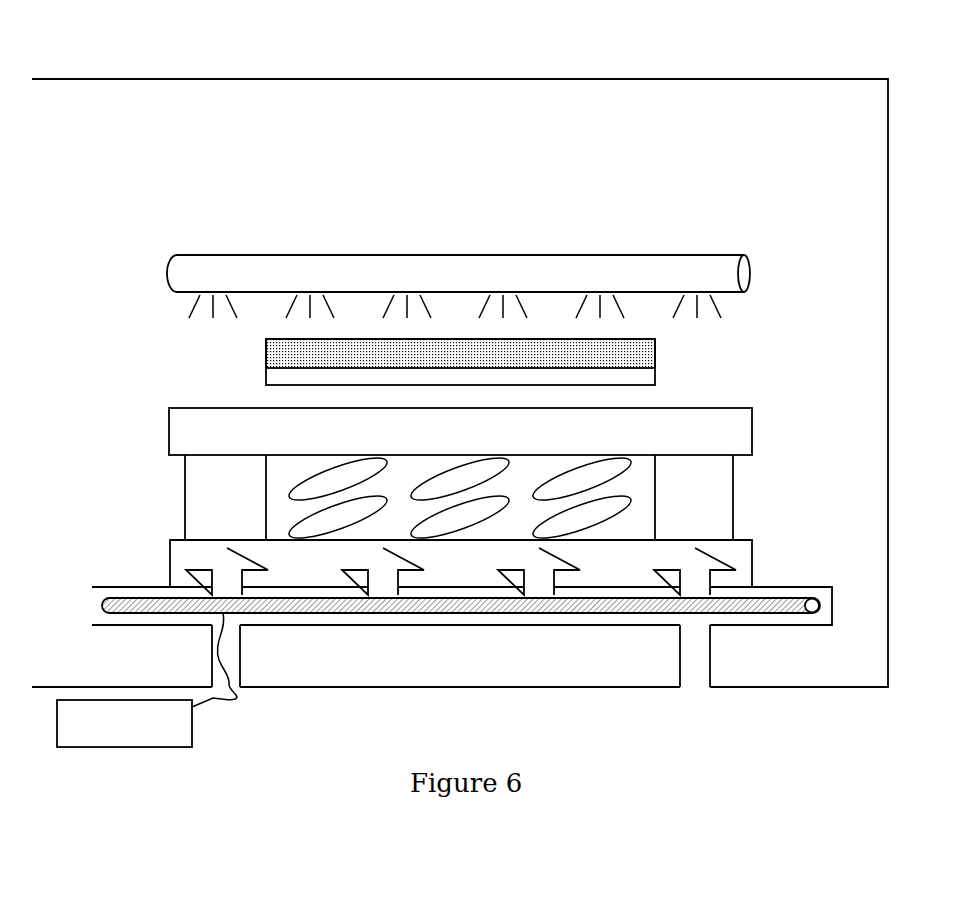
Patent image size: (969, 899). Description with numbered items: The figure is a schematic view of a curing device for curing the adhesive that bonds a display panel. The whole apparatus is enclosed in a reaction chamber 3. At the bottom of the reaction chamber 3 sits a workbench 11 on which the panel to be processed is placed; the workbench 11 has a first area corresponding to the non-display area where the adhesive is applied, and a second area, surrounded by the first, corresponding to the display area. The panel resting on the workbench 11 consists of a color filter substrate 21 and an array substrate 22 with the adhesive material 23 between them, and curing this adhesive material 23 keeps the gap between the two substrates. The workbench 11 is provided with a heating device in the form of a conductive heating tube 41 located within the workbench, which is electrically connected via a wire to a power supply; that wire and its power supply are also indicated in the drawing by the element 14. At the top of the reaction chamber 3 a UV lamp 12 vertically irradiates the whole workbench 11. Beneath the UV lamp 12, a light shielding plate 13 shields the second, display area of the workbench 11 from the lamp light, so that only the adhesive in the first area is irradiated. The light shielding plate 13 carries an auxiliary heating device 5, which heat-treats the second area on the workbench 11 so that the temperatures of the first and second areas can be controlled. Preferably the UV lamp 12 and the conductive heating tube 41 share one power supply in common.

The reaction chamber 3 is at (757, 79).
The auxiliary heating device 5 is at (523, 378).
The light shielding plate 13 is at (615, 355).
The UV lamp 12 is at (750, 272).
The color filter substrate 21 is at (722, 428).
The adhesive material 23 is at (722, 497).
The array substrate 22 is at (723, 562).
The workbench 11 is at (737, 593).
The conductive heating tube 41 is at (755, 608).
The power wire 14 is at (207, 698).